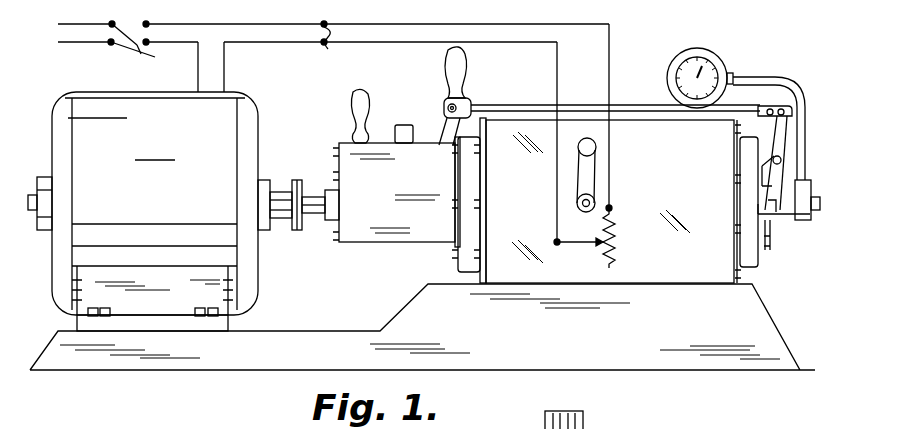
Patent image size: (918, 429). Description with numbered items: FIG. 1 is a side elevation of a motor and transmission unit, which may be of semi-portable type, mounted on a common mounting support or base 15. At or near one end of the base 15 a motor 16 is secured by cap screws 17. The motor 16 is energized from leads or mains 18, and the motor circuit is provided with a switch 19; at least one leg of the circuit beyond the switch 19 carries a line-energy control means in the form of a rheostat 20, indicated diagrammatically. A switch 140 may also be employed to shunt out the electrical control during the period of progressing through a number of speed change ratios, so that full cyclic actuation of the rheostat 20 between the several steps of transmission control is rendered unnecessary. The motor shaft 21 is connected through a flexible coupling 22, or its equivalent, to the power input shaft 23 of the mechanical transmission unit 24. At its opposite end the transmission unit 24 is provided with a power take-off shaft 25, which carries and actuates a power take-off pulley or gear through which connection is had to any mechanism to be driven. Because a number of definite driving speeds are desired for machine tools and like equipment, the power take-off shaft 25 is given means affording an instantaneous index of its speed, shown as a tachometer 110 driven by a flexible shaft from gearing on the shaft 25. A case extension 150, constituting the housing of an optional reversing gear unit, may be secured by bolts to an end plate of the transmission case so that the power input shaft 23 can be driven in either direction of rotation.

The base 15 is at (500, 344).
The motor 16 is at (176, 190).
The cap screws 17 is at (190, 304).
The leads or mains 18 is at (57, 26).
The switch 19 is at (140, 54).
The rheostat 20 is at (614, 244).
The motor shaft 21 is at (288, 190).
The flexible coupling 22 is at (297, 232).
The power input shaft 23 is at (318, 218).
The mechanical transmission unit 24 is at (638, 186).
The power take-off shaft 25 is at (788, 205).
The tachometer 110 is at (722, 46).
The switch 140 is at (326, 44).
The case extension 150 is at (388, 243).